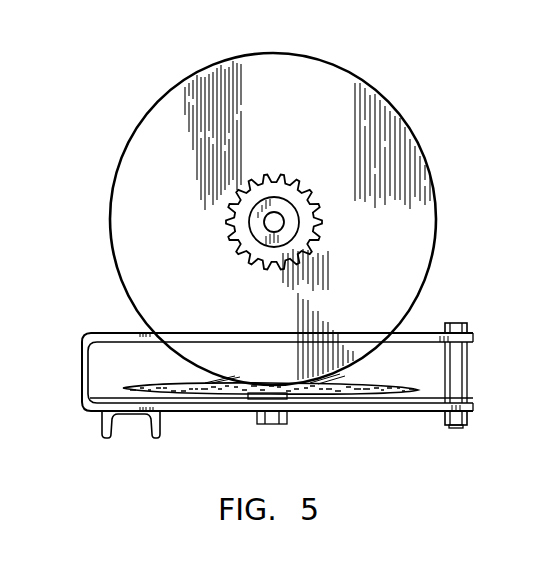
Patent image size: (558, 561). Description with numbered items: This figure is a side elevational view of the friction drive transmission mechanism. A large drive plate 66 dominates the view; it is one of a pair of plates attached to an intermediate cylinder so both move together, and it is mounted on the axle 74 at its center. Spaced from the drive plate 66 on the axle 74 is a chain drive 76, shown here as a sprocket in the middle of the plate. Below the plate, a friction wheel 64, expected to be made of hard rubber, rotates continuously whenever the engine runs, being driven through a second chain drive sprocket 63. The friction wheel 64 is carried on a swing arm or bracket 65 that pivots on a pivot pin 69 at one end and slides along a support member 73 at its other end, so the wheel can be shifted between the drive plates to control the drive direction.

The second chain drive sprocket 63 is at (385, 398).
The friction wheel 64 is at (222, 378).
The swing arm 65 is at (82, 373).
The drive plate 66 is at (178, 103).
The pivot pin 69 is at (452, 428).
The support member 73 is at (100, 420).
The axle 74 is at (270, 222).
The chain drive 76 is at (298, 193).